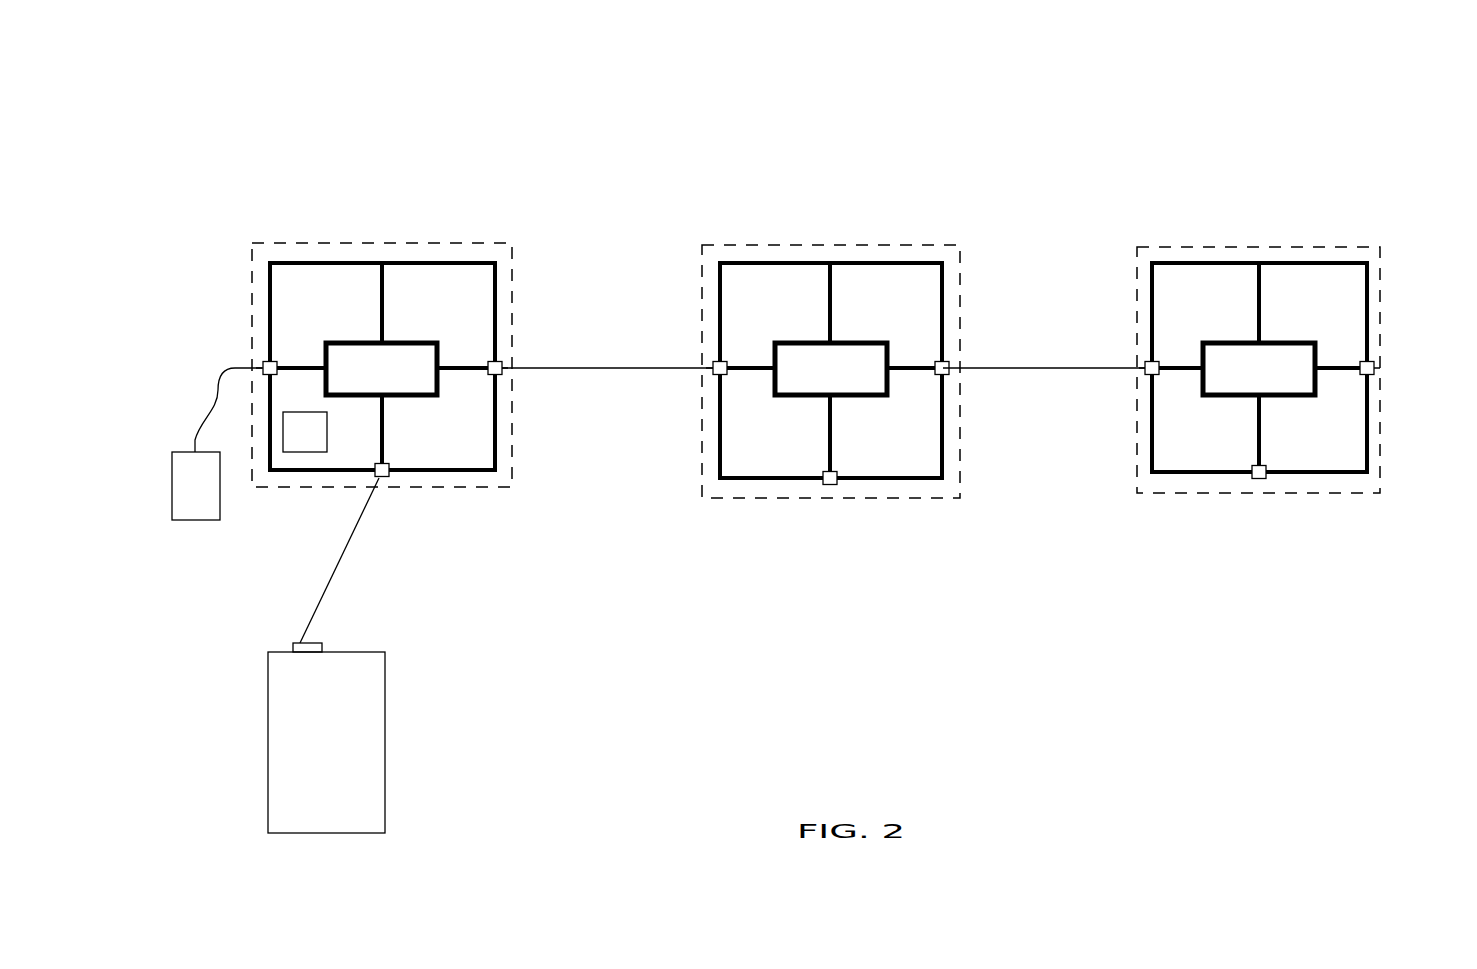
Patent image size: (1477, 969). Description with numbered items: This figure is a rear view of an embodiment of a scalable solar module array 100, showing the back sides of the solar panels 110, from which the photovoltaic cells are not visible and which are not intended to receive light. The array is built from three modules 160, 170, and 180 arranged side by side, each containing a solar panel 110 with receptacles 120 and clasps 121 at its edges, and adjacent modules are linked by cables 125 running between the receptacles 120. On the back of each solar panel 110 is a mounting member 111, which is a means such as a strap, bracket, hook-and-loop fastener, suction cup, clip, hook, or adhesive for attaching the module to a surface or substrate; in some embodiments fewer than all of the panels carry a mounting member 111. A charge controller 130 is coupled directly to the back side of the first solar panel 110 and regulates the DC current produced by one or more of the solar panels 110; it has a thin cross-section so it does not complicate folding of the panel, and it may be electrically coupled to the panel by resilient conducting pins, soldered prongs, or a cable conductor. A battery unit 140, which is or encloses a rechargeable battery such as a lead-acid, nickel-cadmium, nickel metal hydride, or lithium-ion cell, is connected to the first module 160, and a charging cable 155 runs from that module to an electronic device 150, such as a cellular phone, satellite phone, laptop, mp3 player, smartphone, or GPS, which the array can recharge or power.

The scalable solar module array 100 is at (196, 96).
The solar panel 110 is at (455, 282).
The mounting member 111 is at (418, 395).
The receptacle 120 is at (266, 362).
The clasp 121 is at (265, 362).
The cable 125 is at (586, 368).
The charge controller 130 is at (293, 445).
The battery unit 140 is at (172, 481).
The electronic device 150 is at (385, 703).
The charging cable 155 is at (333, 580).
The module 160 is at (305, 243).
The module 170 is at (745, 246).
The module 180 is at (1160, 248).